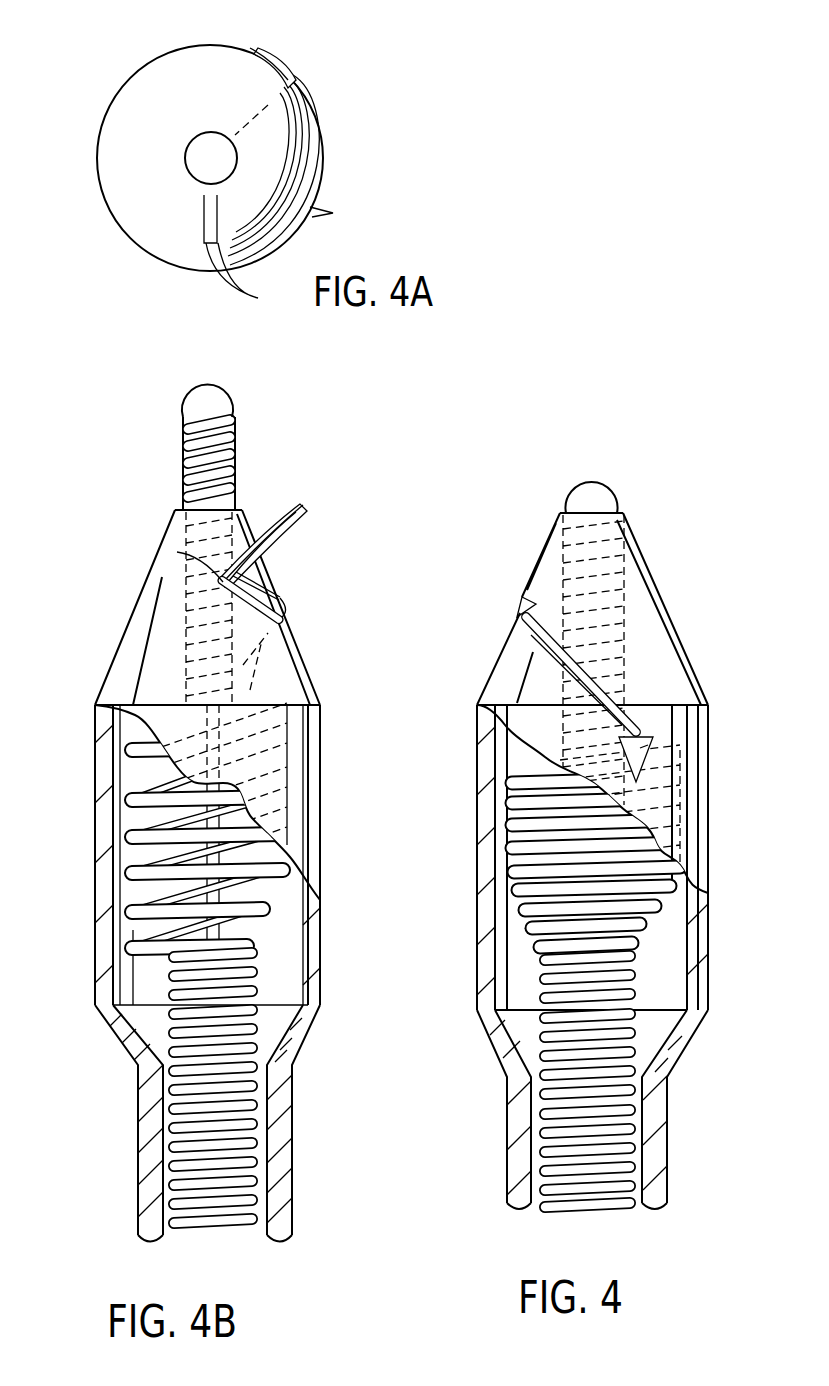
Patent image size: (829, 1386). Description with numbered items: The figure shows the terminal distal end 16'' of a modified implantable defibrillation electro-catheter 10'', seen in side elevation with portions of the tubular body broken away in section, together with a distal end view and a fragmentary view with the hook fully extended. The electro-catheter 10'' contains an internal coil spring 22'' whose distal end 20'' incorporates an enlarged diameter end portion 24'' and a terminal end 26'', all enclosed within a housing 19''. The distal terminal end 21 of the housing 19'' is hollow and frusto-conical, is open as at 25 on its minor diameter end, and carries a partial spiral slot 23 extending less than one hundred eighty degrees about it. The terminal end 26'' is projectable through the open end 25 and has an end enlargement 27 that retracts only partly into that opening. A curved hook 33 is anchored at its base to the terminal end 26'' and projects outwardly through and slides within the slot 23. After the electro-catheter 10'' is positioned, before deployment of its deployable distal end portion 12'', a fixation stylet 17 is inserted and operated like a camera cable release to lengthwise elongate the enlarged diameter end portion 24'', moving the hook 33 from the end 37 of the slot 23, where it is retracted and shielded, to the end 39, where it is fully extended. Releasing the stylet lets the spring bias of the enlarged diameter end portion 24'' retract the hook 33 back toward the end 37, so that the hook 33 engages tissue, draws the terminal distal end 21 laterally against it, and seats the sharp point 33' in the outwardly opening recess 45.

In FIG. 4B, the electro-catheter 10'' is at (345, 1150).
In FIG. 4B, the deployable distal end portion 12'' is at (179, 1145).
In FIG. 4B, the terminal distal end 16'' is at (167, 855).
In FIG. 4B, the fixation stylet 17 is at (207, 910).
In FIG. 4B, the housing 19'' is at (158, 855).
In FIG. 4B, the distal end 20'' is at (279, 993).
In FIG. 4A, the terminal distal end 21 is at (297, 163).
In FIG. 4B, the terminal distal end 21 is at (137, 600).
In FIG. 4B, the internal coil spring 22'' is at (271, 1134).
In FIG. 4A, the partial spiral slot 23 is at (287, 140).
In FIG. 4B, the partial spiral slot 23 is at (270, 593).
In FIG. 4, the partial spiral slot 23 is at (530, 640).
In FIG. 4B, the enlarged diameter end portion 24'' is at (263, 846).
In FIG. 4B, the open end 25 is at (237, 507).
In FIG. 4B, the terminal end 26'' is at (154, 463).
In FIG. 4A, the end enlargement 27 is at (198, 163).
In FIG. 4B, the end enlargement 27 is at (233, 400).
In FIG. 4A, the curved hook 33 is at (312, 91).
In FIG. 4B, the curved hook 33 is at (301, 542).
In FIG. 4, the curved hook 33 is at (635, 680).
In FIG. 4B, the sharp point 33' is at (316, 510).
In FIG. 4, the end of slot 37 is at (600, 645).
In FIG. 4B, the end of slot 39 is at (177, 552).
In FIG. 4A, the outwardly opening recess 45 is at (267, 48).
In FIG. 4, the outwardly opening recess 45 is at (650, 743).